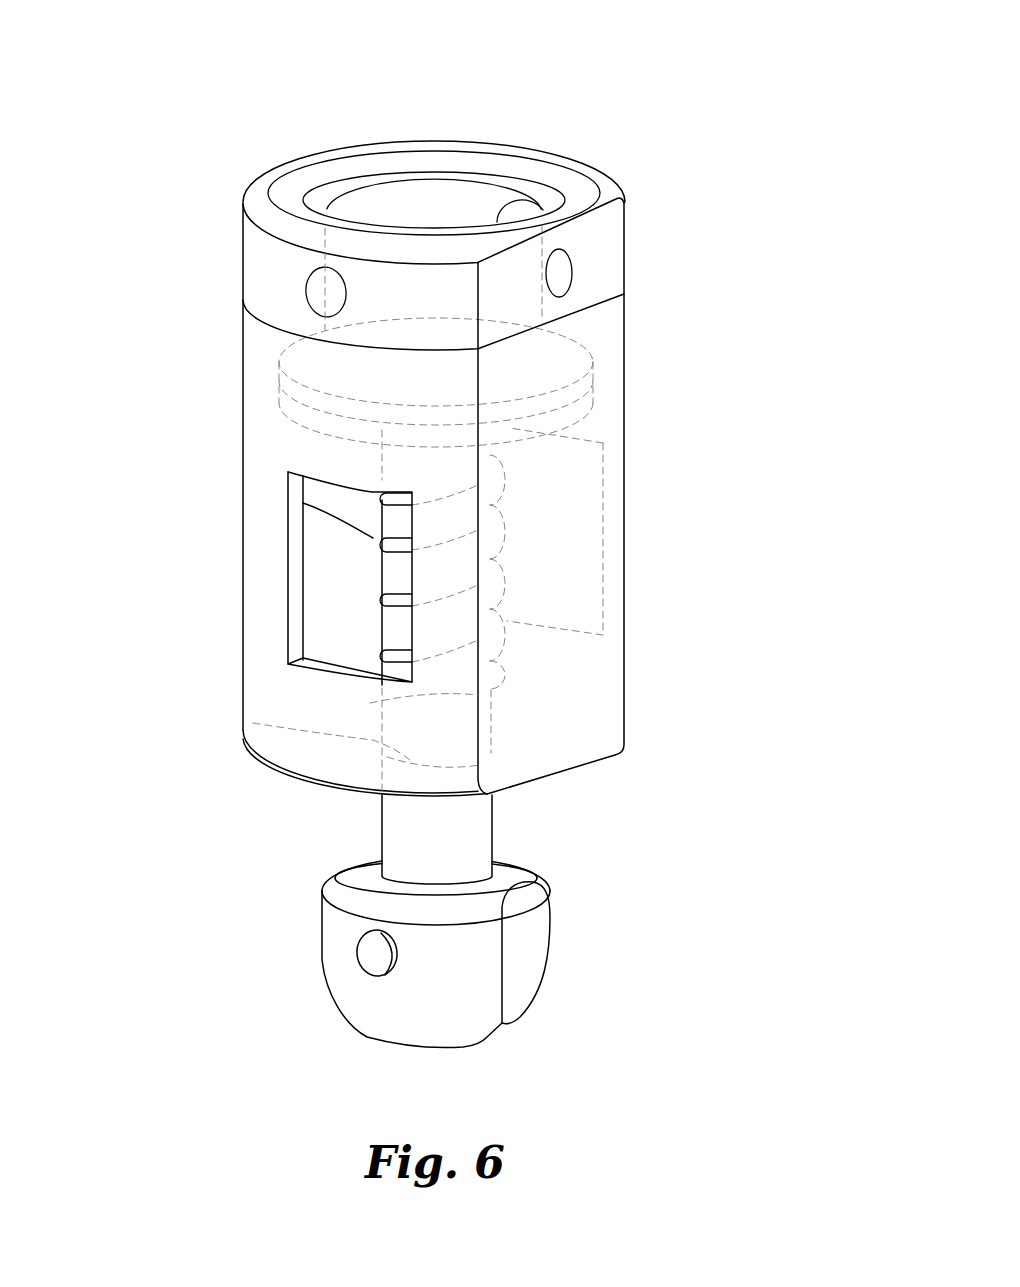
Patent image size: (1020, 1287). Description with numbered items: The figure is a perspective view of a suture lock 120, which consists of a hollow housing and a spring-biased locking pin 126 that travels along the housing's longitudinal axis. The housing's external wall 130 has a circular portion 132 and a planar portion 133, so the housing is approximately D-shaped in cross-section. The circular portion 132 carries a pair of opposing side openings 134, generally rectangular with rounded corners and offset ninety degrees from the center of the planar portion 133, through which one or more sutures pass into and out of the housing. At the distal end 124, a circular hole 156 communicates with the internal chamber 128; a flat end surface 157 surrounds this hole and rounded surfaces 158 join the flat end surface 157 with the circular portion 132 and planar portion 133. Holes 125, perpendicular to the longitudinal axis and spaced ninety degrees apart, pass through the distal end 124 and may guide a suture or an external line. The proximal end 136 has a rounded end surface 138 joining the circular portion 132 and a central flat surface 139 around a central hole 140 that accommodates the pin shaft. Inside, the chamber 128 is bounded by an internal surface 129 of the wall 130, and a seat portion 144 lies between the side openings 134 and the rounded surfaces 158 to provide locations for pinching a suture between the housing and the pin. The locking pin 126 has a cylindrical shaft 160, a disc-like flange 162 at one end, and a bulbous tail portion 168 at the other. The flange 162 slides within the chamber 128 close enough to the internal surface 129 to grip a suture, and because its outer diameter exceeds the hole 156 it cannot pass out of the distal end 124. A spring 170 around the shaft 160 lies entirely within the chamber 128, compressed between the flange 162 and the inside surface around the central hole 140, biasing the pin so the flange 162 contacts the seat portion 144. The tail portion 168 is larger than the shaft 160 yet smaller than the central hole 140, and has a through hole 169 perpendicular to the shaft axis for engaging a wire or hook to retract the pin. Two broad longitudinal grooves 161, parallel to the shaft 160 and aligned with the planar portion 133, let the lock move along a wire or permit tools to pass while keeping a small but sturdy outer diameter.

The lock 120 is at (613, 113).
The distal end 124 is at (242, 222).
The holes 125 is at (510, 210).
The locking pin 126 is at (467, 980).
The chamber 128 is at (326, 528).
The internal surface 129 is at (320, 612).
The external wall 130 is at (253, 375).
The circular portion 132 is at (263, 577).
The planar portion 133 is at (603, 696).
The side openings 134 is at (575, 500).
The proximal end 136 is at (586, 763).
The rounded end surface 138 is at (257, 770).
The central flat surface 139 is at (551, 777).
The central hole 140 is at (310, 730).
The seat portion 144 is at (272, 340).
The hole 156 is at (377, 188).
The flat end surface 157 is at (298, 175).
The rounded surface 158 is at (273, 200).
The shaft 160 is at (402, 825).
The grooves 161 is at (540, 932).
The flange 162 is at (593, 377).
The tail portion 168 is at (390, 1019).
The through hole 169 is at (372, 957).
The spring 170 is at (288, 498).